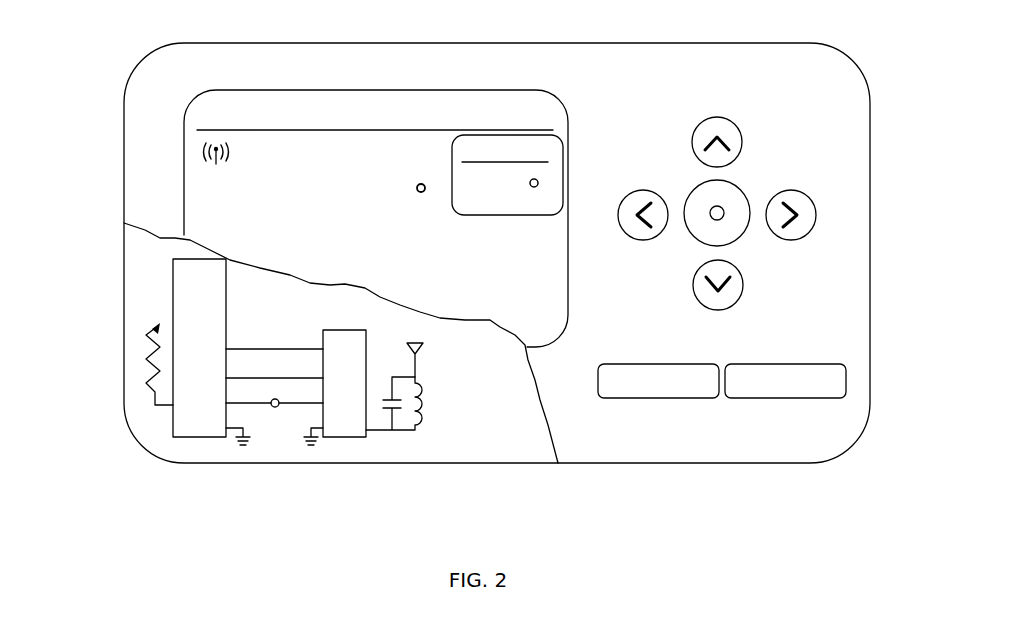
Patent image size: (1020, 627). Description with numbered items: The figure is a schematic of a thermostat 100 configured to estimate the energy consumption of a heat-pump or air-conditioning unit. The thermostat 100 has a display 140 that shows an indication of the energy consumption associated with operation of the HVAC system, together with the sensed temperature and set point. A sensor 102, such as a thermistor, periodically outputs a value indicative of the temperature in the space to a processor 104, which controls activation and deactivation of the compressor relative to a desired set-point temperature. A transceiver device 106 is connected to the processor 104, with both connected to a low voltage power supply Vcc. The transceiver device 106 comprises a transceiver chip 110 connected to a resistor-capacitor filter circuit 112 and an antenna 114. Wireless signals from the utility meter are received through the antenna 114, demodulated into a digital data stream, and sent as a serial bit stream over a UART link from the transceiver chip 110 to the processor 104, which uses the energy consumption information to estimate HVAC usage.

The thermostat 100 is at (622, 463).
The display 140 is at (185, 170).
The sensor 102 is at (147, 413).
The processor 104 is at (203, 437).
The transceiver device 106 is at (387, 452).
The transceiver chip 110 is at (343, 437).
The resistor-capacitor filter circuit 112 is at (411, 430).
The antenna 114 is at (418, 356).